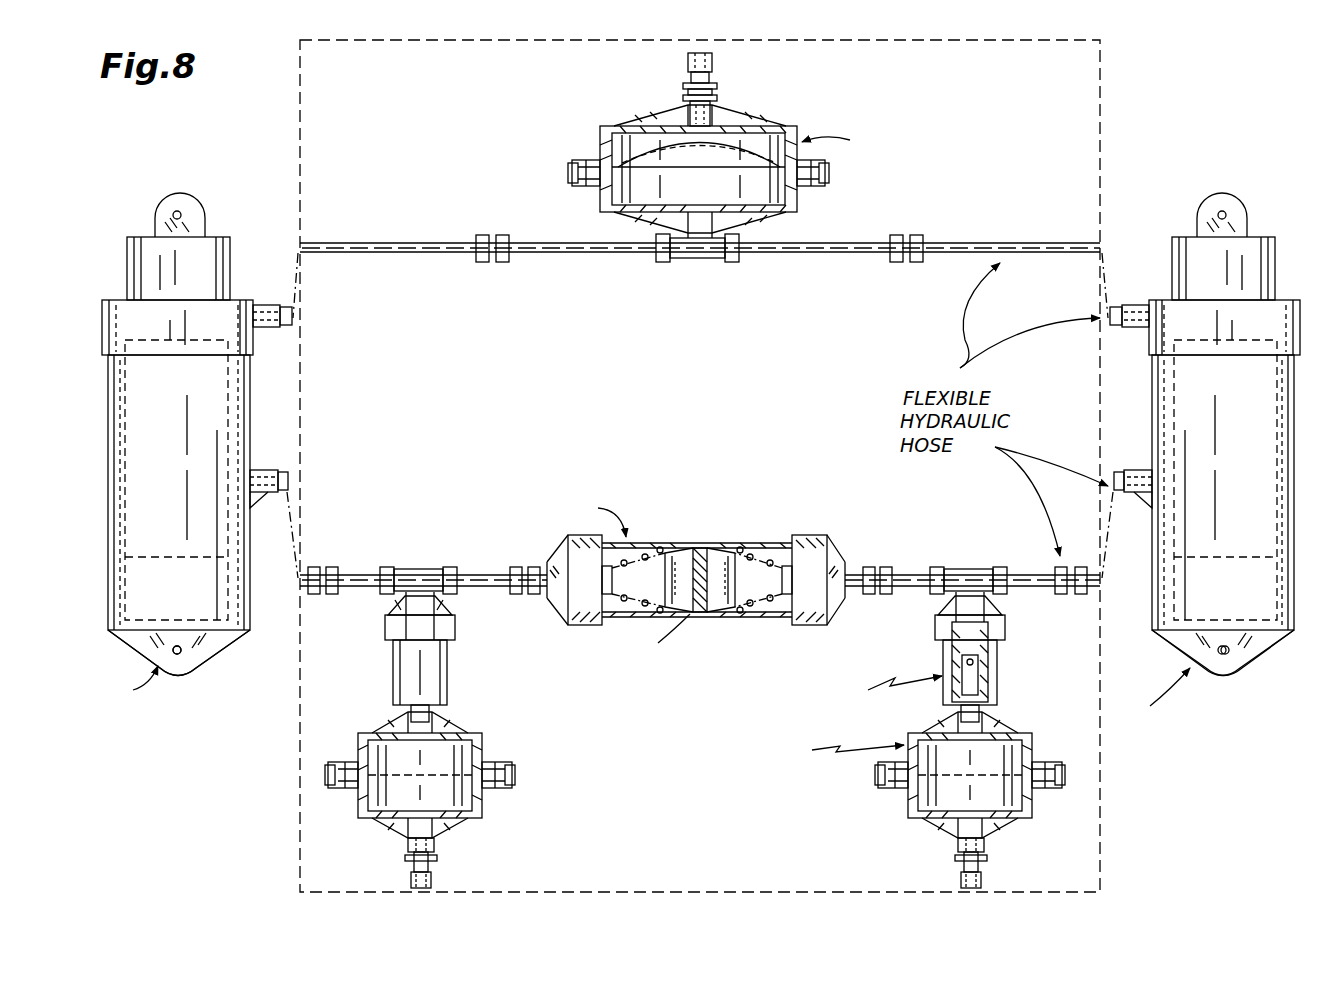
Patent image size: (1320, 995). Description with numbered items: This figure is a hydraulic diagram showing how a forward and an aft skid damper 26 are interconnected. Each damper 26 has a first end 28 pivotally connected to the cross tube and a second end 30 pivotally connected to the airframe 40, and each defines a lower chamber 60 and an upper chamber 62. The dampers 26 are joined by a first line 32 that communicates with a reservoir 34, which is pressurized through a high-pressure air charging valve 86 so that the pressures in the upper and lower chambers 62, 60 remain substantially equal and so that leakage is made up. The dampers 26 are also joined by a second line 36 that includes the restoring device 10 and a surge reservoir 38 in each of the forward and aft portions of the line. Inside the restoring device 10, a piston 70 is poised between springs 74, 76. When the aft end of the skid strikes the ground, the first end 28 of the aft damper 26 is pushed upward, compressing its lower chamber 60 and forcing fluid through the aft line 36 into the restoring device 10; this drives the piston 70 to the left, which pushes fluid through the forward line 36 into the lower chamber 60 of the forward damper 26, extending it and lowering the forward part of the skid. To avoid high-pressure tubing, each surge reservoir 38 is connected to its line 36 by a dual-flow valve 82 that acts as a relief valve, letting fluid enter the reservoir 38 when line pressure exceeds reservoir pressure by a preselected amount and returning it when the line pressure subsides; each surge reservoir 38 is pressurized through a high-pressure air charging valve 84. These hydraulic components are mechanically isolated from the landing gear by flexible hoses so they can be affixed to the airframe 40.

The restoring device 10 is at (700, 620).
The damper 26 is at (262, 388).
The first end 28 is at (140, 641).
The second end 30 is at (198, 212).
The first line 32 is at (432, 212).
The reservoir 34 is at (770, 195).
The second line 36 is at (303, 583).
The surge reservoir 38 is at (485, 739).
The airframe 40 is at (1103, 190).
The lower chamber 60 is at (1170, 452).
The upper chamber 62 is at (1168, 380).
The piston 70 is at (690, 548).
The spring 74 is at (765, 556).
The spring 76 is at (573, 608).
The dual-flow valve 82 is at (437, 670).
The high-pressure air charging valve 84 is at (438, 860).
The high-pressure air charging valve 86 is at (712, 78).